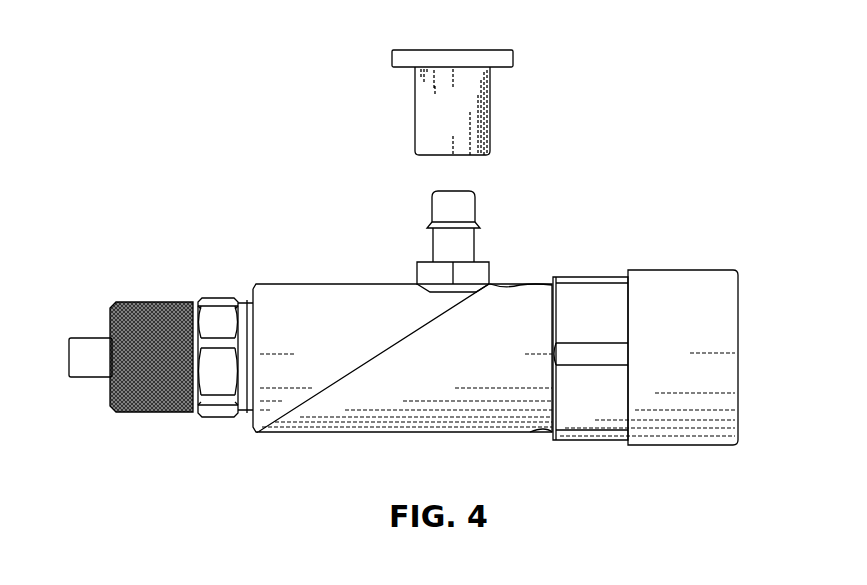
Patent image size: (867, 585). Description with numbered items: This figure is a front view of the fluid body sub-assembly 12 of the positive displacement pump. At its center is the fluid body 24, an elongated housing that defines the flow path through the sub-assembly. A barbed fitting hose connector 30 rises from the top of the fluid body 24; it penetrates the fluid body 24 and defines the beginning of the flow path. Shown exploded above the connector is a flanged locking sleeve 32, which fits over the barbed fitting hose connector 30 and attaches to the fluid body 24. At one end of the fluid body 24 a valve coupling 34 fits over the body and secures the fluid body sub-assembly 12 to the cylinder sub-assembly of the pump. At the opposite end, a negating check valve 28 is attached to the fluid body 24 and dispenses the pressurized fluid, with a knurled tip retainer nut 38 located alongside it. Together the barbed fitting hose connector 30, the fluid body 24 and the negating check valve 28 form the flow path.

The fluid body sub-assembly 12 is at (628, 81).
The fluid body 24 is at (340, 422).
The negating check valve 28 is at (90, 378).
The barbed fitting hose connector 30 is at (478, 216).
The flanged locking sleeve 32 is at (481, 52).
The valve coupling 34 is at (672, 436).
The tip retainer nut 38 is at (157, 300).